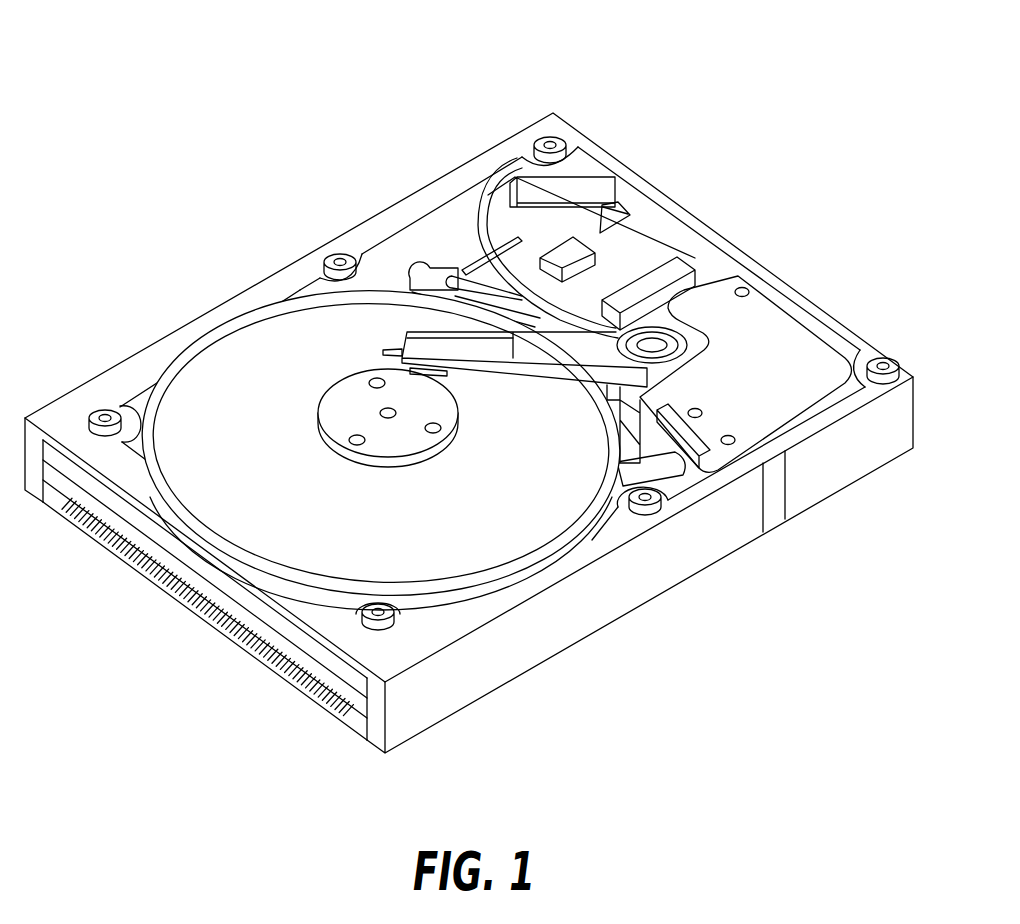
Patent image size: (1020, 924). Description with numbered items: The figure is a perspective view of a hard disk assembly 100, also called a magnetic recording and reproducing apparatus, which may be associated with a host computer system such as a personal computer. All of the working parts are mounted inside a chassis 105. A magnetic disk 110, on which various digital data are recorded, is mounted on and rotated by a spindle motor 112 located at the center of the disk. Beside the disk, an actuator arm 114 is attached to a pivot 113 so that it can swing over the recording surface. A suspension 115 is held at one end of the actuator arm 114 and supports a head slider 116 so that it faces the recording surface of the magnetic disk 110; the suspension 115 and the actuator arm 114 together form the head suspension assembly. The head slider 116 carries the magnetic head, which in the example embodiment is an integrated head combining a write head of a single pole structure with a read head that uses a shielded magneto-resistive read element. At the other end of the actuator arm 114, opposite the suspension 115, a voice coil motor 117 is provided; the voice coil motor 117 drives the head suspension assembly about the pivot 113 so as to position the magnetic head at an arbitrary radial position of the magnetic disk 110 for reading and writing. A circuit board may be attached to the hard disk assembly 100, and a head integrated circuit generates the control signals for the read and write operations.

The hard disk assembly 100 is at (190, 88).
The chassis 105 is at (68, 405).
The magnetic disk 110 is at (232, 347).
The spindle motor 112 is at (343, 402).
The pivot 113 is at (655, 345).
The actuator arm 114 is at (592, 357).
The suspension 115 is at (473, 375).
The head slider 116 is at (423, 377).
The voice coil motor 117 is at (788, 322).